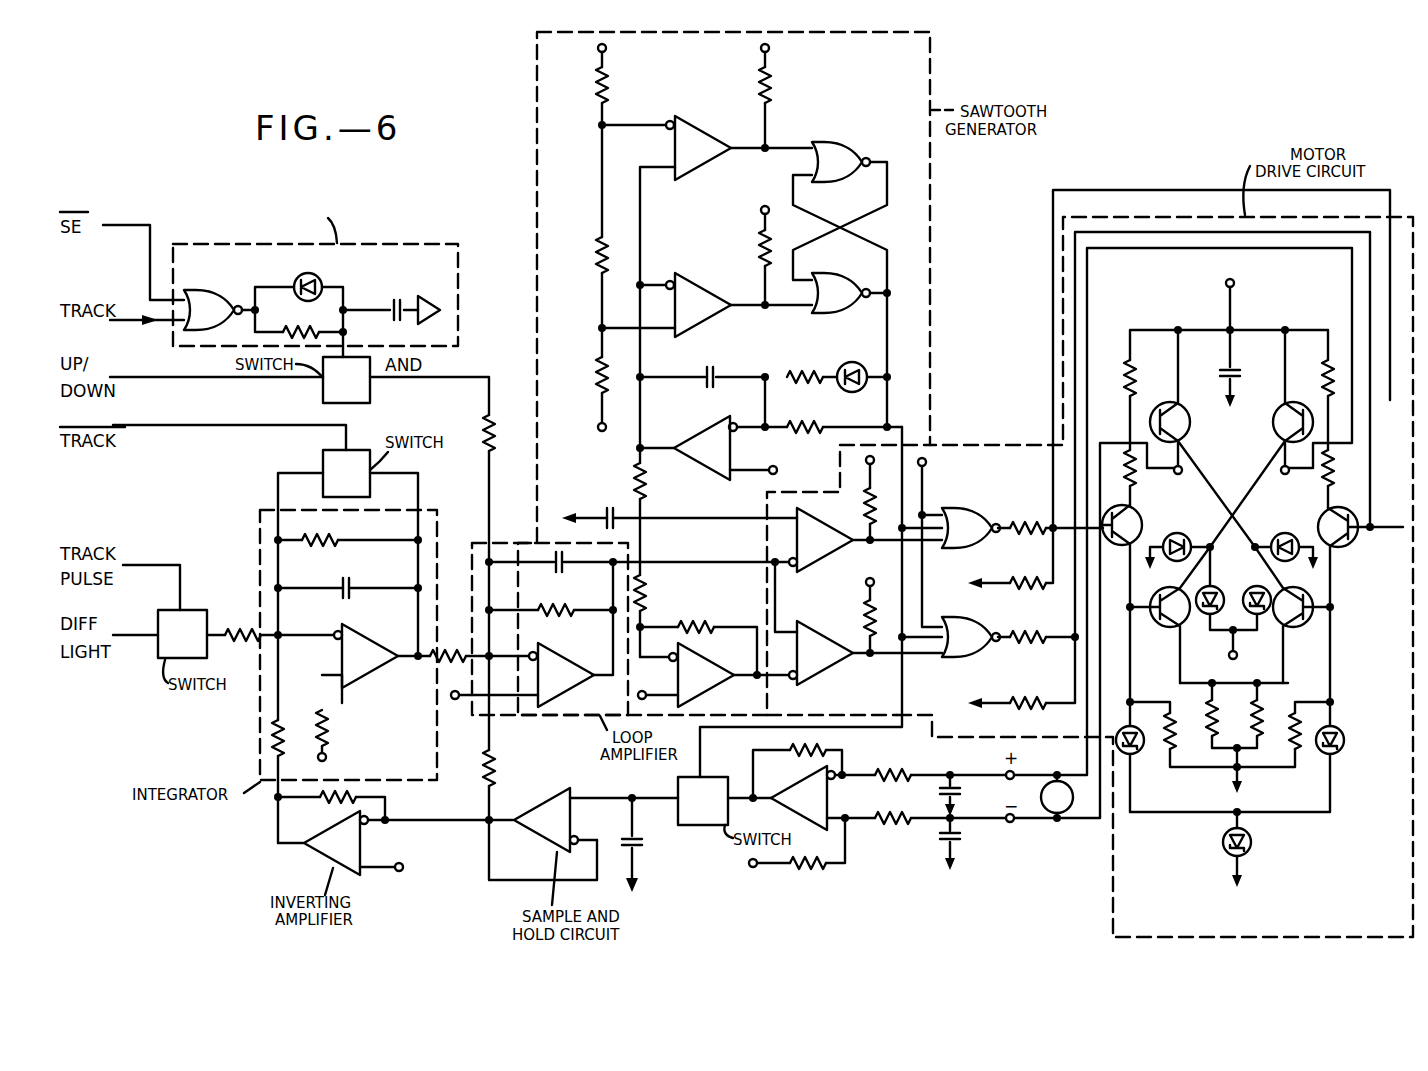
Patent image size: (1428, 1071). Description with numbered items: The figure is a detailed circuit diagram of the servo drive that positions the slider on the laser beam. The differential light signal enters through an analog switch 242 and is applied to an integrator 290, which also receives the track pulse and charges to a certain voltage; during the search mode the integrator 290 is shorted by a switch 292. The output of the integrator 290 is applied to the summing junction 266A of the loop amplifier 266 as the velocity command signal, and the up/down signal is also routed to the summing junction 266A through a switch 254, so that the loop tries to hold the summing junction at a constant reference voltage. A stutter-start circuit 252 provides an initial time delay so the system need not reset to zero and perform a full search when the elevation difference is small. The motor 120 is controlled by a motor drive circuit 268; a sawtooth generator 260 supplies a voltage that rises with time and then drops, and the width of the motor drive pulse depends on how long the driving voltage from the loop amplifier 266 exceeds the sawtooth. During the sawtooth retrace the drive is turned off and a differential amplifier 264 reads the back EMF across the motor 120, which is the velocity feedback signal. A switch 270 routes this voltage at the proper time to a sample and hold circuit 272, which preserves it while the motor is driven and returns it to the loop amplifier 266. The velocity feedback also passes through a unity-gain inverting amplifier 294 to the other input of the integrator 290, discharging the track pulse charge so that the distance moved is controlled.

The stutter-start circuit 252 is at (375, 238).
The switch 254 is at (370, 393).
The switch 292 is at (323, 463).
The analog switch 242 is at (195, 604).
The integrator 290 is at (256, 724).
The loop amplifier 266 is at (531, 724).
The summing junction 266A is at (462, 672).
The inverting amplifier 294 is at (318, 865).
The sample and hold circuit 272 is at (533, 847).
The switch 270 is at (704, 832).
The differential amplifier 264 is at (861, 842).
The motor 120 is at (1042, 822).
The sawtooth generator 260 is at (940, 78).
The motor drive circuit 268 is at (1152, 210).